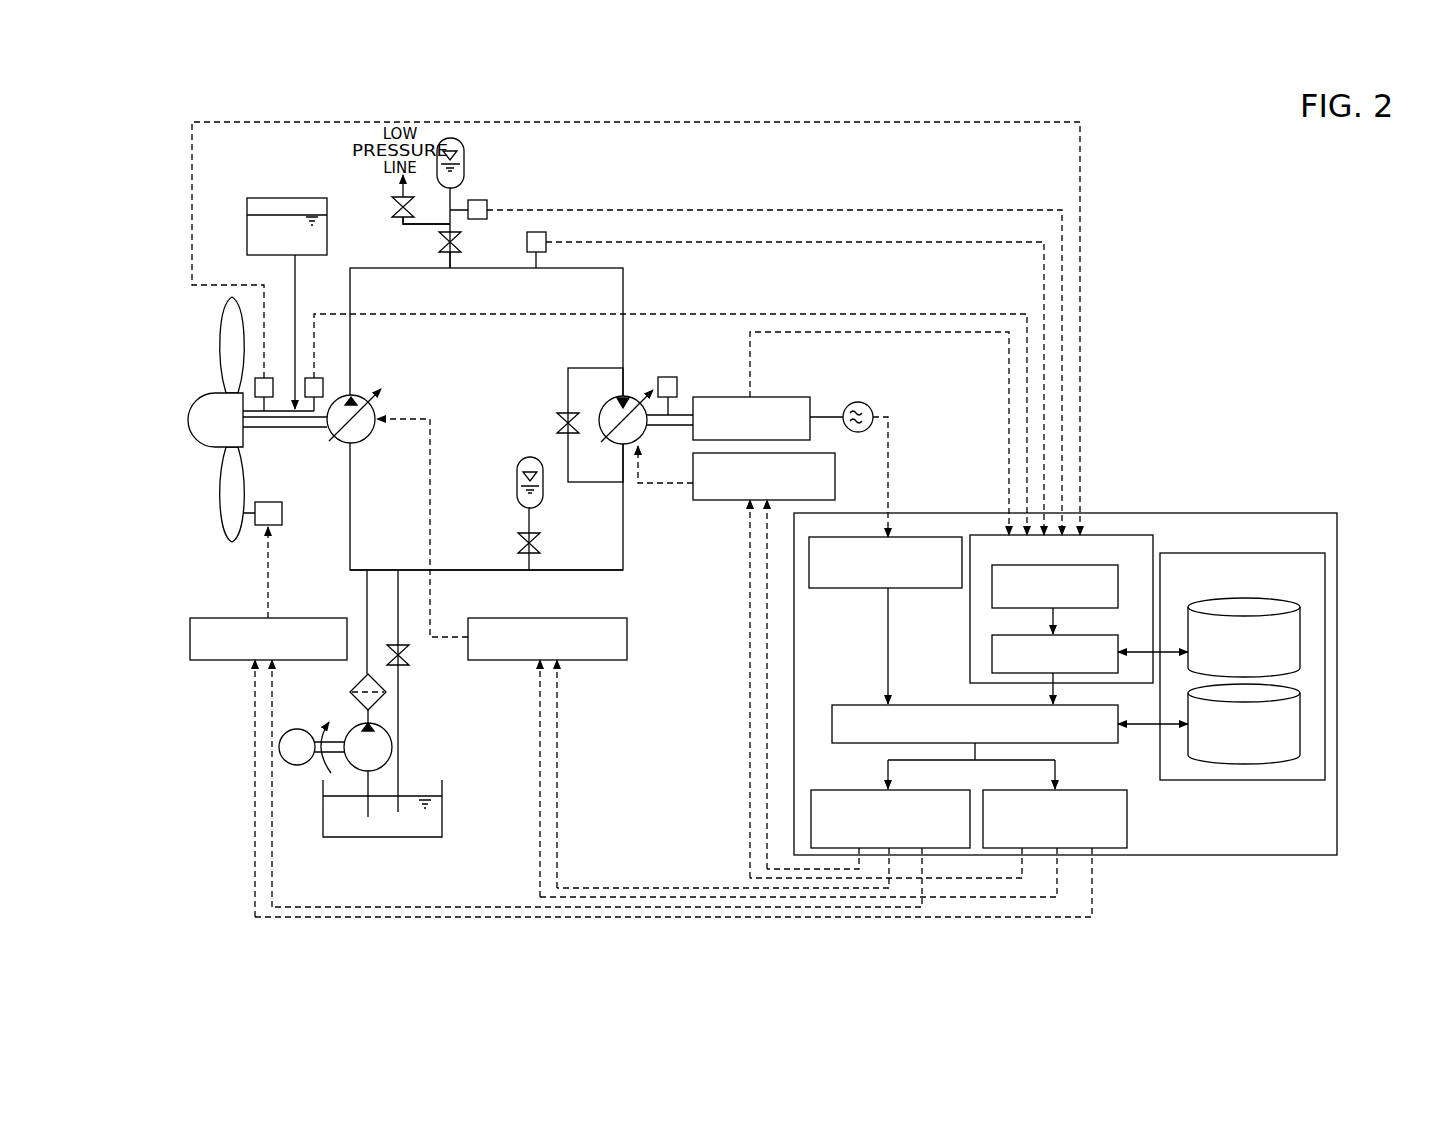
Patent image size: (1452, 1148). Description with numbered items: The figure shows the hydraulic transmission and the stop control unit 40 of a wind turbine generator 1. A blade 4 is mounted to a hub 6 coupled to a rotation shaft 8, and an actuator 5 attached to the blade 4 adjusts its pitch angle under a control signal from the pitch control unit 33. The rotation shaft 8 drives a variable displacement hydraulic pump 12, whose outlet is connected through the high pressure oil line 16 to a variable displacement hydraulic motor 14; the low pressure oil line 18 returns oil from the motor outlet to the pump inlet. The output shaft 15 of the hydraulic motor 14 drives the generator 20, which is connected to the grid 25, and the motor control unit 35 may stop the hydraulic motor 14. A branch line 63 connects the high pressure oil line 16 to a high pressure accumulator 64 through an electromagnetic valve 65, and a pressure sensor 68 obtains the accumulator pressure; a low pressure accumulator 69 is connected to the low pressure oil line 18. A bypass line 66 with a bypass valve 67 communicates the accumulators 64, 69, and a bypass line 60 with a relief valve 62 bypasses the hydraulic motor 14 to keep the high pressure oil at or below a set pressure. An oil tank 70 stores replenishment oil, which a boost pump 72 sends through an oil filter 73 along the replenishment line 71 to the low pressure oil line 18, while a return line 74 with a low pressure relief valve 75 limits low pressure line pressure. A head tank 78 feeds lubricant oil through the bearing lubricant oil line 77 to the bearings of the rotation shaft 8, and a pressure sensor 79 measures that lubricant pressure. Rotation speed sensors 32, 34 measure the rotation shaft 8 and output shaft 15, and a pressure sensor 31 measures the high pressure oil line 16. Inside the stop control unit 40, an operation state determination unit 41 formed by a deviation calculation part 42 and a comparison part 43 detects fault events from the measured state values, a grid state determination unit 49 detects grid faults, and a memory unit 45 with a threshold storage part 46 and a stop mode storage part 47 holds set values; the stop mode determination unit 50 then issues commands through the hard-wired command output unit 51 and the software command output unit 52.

The wind turbine generator 1 is at (200, 315).
The blade 4 is at (244, 335).
The actuator (pitch drive mechanism) 5 is at (280, 502).
The hub 6 is at (201, 400).
The rotation shaft 8 is at (256, 430).
The hydraulic pump 12 is at (378, 405).
The hydraulic motor 14 is at (636, 396).
The output shaft 15 is at (663, 428).
The high pressure oil line 16 is at (474, 270).
The low pressure oil line 18 is at (497, 569).
The generator 20 is at (790, 397).
The grid 25 is at (860, 402).
The pressure sensor 31 is at (547, 240).
The rotation speed sensor 32 is at (316, 378).
The pitch control unit 33 is at (233, 618).
The rotation speed sensor 34 is at (670, 377).
The motor control unit 35 is at (835, 472).
The stop control unit 40 is at (1215, 513).
The operation state determination unit 41 is at (1140, 535).
The deviation calculation part 42 is at (1110, 565).
The comparison part 43 is at (1108, 635).
The memory unit 45 is at (1288, 554).
The threshold storage part 46 is at (1272, 600).
The stop mode storage part 47 is at (1281, 690).
The grid state determination unit 49 is at (925, 589).
The stop mode determination unit 50 is at (852, 705).
The hard-wired command output unit 51 is at (826, 790).
The software command output unit 52 is at (1100, 790).
The bypass line 60 is at (586, 368).
The relief valve 62 is at (561, 420).
The branch line 63 is at (448, 262).
The high pressure accumulator 64 is at (465, 153).
The electromagnetic valve 65 is at (462, 243).
The bypass line 66 is at (403, 223).
The bypass valve 67 is at (393, 200).
The pressure sensor 68 is at (478, 200).
The low pressure accumulator 69 is at (516, 470).
The oil tank 70 is at (443, 792).
The replenishment line 71 is at (367, 598).
The boost pump 72 is at (346, 770).
The oil filter 73 is at (352, 684).
The return line 74 is at (400, 738).
The low pressure relief valve 75 is at (403, 668).
The bearing lubricant oil line 77 is at (295, 266).
The head tank 78 is at (246, 228).
The pressure sensor 79 is at (266, 378).